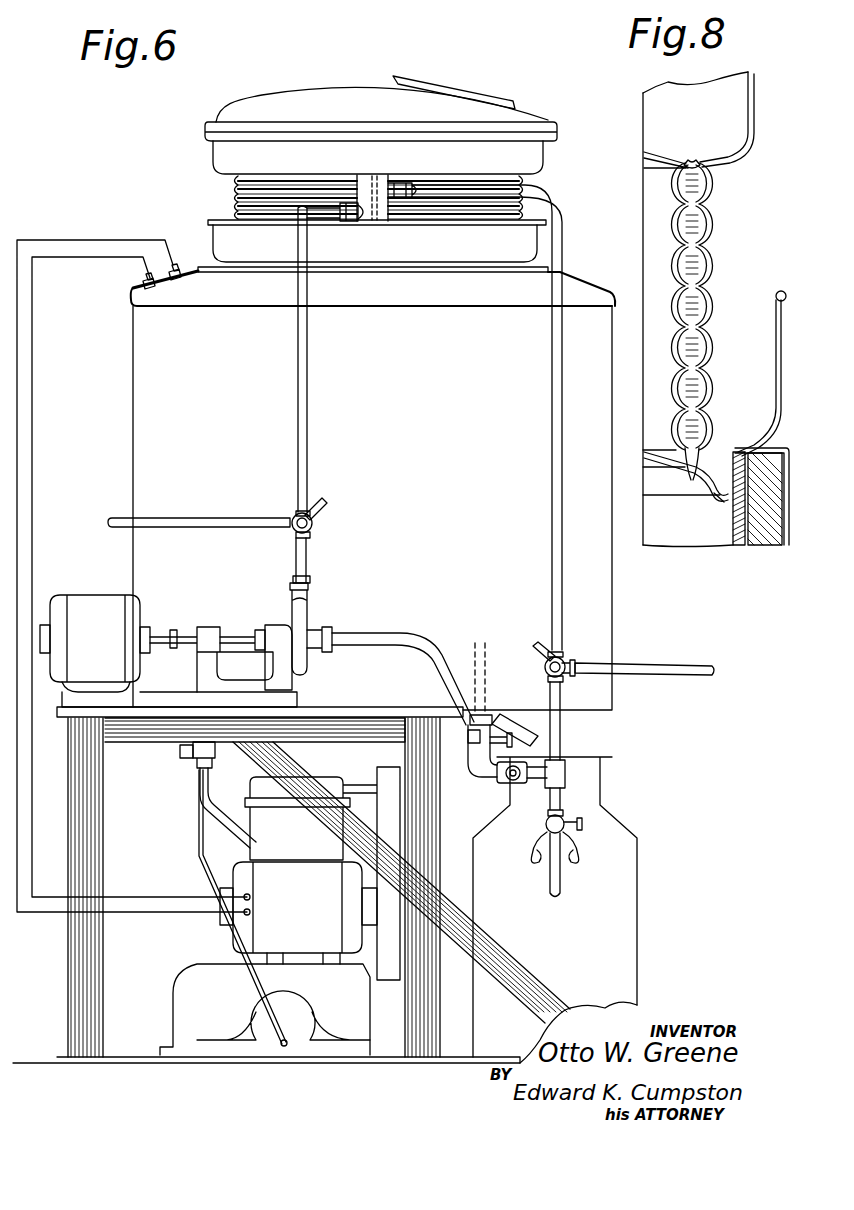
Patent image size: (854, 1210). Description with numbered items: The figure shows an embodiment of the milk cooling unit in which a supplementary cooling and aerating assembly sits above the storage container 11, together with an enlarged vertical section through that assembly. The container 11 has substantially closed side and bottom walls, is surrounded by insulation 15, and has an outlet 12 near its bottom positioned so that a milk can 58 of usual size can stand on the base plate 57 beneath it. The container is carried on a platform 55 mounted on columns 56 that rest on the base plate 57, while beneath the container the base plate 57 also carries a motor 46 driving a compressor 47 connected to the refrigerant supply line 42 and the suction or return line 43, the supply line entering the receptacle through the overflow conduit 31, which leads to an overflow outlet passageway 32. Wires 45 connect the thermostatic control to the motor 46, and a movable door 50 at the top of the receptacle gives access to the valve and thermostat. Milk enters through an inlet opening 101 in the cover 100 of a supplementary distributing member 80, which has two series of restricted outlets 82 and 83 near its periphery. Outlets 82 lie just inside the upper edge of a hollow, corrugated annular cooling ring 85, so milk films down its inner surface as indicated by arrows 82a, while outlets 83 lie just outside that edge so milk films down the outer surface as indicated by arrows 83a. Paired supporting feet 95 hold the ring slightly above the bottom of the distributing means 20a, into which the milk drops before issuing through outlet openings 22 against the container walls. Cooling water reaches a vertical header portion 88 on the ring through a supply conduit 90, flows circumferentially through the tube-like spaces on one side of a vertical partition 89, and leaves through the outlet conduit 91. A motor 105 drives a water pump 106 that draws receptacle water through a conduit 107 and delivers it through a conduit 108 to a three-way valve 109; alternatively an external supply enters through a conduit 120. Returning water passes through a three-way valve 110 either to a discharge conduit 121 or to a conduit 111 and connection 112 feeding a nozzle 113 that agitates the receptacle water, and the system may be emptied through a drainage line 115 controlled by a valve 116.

In FIG. 6, the cover 100 is at (321, 84).
In FIG. 6, the inlet opening 101 is at (472, 92).
In FIG. 6, the supplementary distributing member 80 is at (224, 147).
In FIG. 8, the supplementary distributing member 80 is at (748, 101).
In FIG. 6, the hollow annular ring 85 is at (236, 190).
In FIG. 8, the hollow annular ring 85 is at (709, 337).
In FIG. 6, the vertical partition 89 is at (368, 220).
In FIG. 6, the vertical header portion 88 is at (388, 222).
In FIG. 6, the distributing means 20a is at (222, 240).
In FIG. 8, the distributing means 20a is at (772, 400).
In FIG. 6, the supply conduit 90 is at (310, 361).
In FIG. 6, the outlet conduit 91 is at (563, 262).
In FIG. 6, the wires 45 is at (101, 256).
In FIG. 6, the movable door 50 is at (140, 284).
In FIG. 6, the conduit 120 is at (169, 518).
In FIG. 6, the valve 109 is at (314, 521).
In FIG. 6, the conduit 108 is at (308, 567).
In FIG. 6, the water pump 106 is at (308, 623).
In FIG. 6, the motor 105 is at (88, 605).
In FIG. 6, the conduit 107 is at (405, 641).
In FIG. 6, the platform 55 is at (359, 708).
In FIG. 6, the columns 56 is at (68, 980).
In FIG. 6, the base plate 57 is at (254, 1063).
In FIG. 6, the nozzle 113 is at (483, 703).
In FIG. 6, the connection 112 is at (474, 781).
In FIG. 6, the outlet 12 is at (540, 737).
In FIG. 6, the valve 110 is at (565, 652).
In FIG. 6, the conduit 121 is at (655, 660).
In FIG. 6, the conduit 111 is at (562, 698).
In FIG. 6, the valve 116 is at (545, 822).
In FIG. 6, the drainage line 115 is at (562, 893).
In FIG. 6, the milk can 58 is at (637, 905).
In FIG. 6, the overflow outlet passageway 32 is at (178, 751).
In FIG. 6, the overflow conduit 31 is at (195, 765).
In FIG. 6, the suction or return line 43 is at (214, 800).
In FIG. 6, the refrigerant supply line 42 is at (198, 829).
In FIG. 6, the compressor 47 is at (300, 845).
In FIG. 6, the motor 46 is at (305, 928).
In FIG. 8, the outlets 82 is at (686, 158).
In FIG. 8, the outlets 83 is at (698, 158).
In FIG. 8, the arrows 82a is at (668, 370).
In FIG. 8, the arrows 83a is at (714, 222).
In FIG. 8, the supporting feet 95 is at (704, 446).
In FIG. 8, the outlet openings 22 is at (721, 501).
In FIG. 8, the container 11 is at (735, 546).
In FIG. 8, the thermal insulation 15 is at (768, 546).